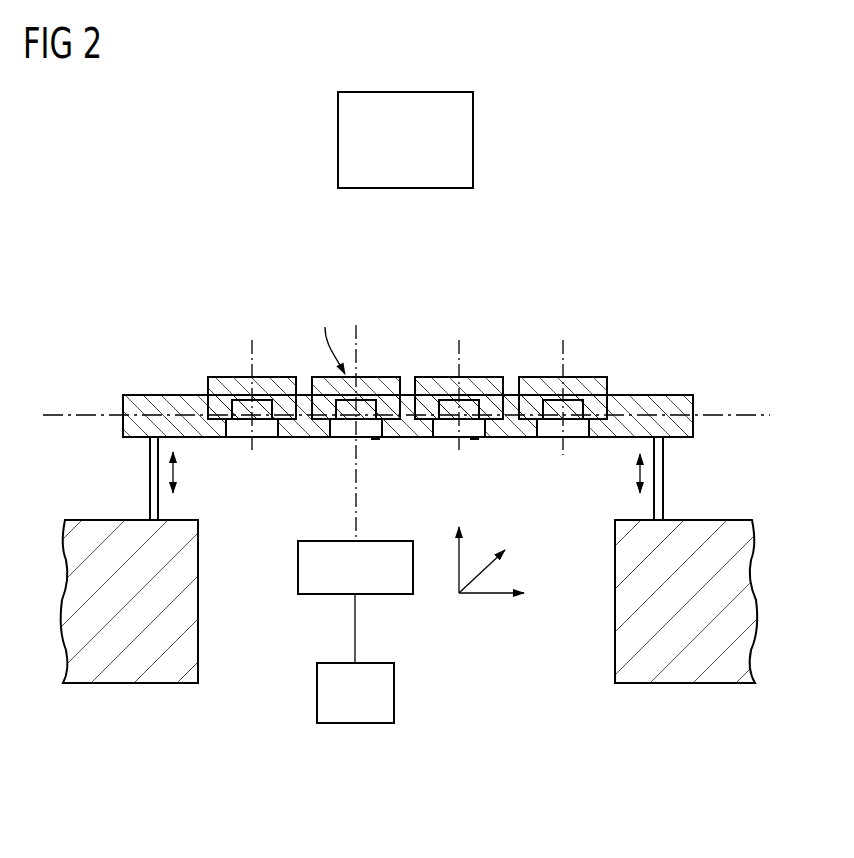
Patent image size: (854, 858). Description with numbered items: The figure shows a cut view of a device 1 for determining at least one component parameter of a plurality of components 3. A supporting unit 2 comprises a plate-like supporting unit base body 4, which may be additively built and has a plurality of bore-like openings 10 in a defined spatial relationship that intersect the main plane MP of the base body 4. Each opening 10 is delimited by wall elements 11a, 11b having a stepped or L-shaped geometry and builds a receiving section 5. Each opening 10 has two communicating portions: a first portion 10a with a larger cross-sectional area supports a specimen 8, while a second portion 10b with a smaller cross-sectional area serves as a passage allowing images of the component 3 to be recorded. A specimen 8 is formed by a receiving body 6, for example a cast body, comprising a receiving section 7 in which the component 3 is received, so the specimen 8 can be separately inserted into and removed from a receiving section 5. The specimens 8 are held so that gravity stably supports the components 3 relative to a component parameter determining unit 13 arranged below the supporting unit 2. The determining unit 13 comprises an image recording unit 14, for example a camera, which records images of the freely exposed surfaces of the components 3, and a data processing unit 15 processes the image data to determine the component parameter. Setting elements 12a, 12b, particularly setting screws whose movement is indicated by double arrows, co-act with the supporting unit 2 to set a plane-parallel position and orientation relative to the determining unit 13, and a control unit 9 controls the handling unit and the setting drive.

The device 1 is at (250, 748).
The supporting unit 2 is at (118, 310).
The component 3 is at (358, 403).
The plate-like supporting unit base body 4 is at (148, 407).
The receiving section 5 is at (376, 442).
The receiving body 6 is at (381, 385).
The receiving section of the receiving body 7 is at (467, 393).
The specimen 8 is at (333, 338).
The control unit 9 is at (473, 138).
The opening 10 is at (564, 422).
The first portion of the opening 10a is at (592, 402).
The second portion of the opening 10b is at (573, 430).
The wall element 11a is at (200, 393).
The wall element 11b is at (283, 428).
The setting element 12a is at (150, 470).
The setting element 12b is at (663, 472).
The component parameter determining unit 13 is at (433, 633).
The image recording unit 14 is at (298, 565).
The data processing unit 15 is at (317, 694).
The main plane MP is at (60, 411).